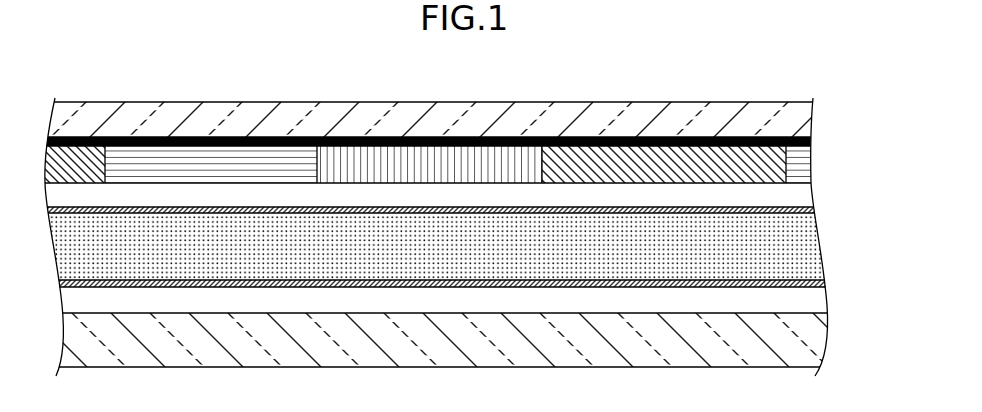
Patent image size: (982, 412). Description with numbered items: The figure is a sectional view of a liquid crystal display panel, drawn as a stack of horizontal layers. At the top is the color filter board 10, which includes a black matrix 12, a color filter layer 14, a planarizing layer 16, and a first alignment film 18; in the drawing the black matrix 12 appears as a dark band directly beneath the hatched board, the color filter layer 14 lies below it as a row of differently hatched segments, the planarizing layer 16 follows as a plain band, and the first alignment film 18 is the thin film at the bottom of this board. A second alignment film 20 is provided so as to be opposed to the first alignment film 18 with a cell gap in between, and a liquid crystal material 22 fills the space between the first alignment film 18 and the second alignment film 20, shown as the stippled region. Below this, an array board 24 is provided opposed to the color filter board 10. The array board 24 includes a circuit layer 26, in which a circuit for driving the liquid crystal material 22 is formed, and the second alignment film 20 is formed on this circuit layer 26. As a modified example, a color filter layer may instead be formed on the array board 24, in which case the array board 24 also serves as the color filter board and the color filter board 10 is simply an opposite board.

The color filter board 10 is at (830, 113).
The black matrix 12 is at (805, 140).
The color filter layer 14 is at (802, 157).
The planarizing layer 16 is at (805, 198).
The first alignment film 18 is at (812, 210).
The liquid crystal material 22 is at (818, 243).
The second alignment film 20 is at (820, 280).
The circuit layer 26 is at (815, 302).
The array board 24 is at (842, 345).